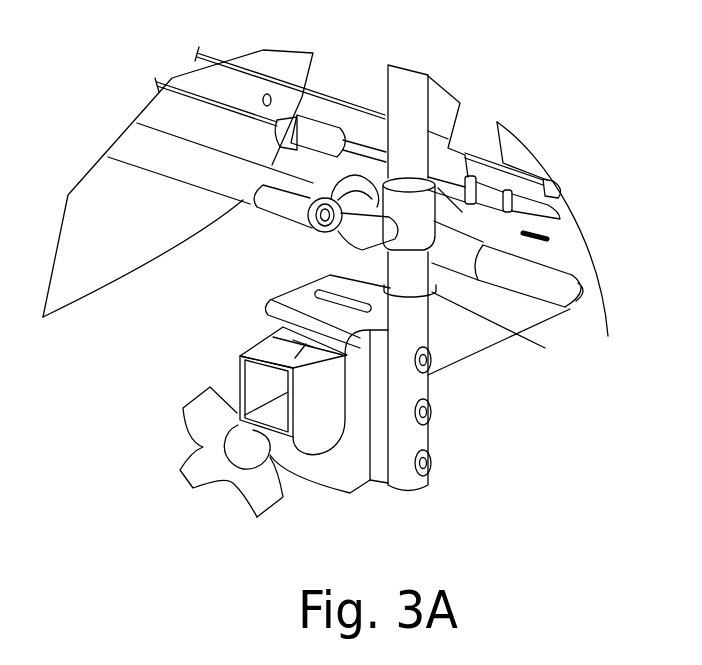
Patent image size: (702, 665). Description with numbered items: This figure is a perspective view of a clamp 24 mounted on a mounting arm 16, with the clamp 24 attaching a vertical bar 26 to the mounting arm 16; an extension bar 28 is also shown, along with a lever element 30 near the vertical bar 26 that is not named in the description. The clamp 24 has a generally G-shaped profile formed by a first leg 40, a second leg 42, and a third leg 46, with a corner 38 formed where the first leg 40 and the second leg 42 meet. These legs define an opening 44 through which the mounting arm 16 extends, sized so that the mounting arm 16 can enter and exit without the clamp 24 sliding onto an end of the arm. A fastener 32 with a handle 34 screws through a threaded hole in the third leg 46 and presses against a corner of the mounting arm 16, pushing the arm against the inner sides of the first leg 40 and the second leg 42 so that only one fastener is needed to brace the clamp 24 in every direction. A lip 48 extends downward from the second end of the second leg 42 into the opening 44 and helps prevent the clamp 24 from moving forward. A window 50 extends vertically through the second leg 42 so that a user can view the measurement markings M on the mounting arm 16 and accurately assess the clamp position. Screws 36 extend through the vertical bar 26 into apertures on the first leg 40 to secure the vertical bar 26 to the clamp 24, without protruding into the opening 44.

The vertical bar 26 is at (407, 92).
The extension bar 28 is at (590, 293).
The lever knob 30 is at (397, 211).
The window 50 is at (300, 287).
The second leg 42 is at (270, 307).
The lip 48 is at (270, 332).
The mounting arm 16 is at (275, 337).
The measurement markings M is at (255, 372).
The opening 44 is at (188, 338).
The fastener 32 is at (227, 437).
The handle 34 is at (282, 505).
The third leg 46 is at (303, 462).
The clamp 24 is at (347, 493).
The corner 38 is at (430, 362).
The screws 36 is at (433, 463).
The first leg 40 is at (432, 464).